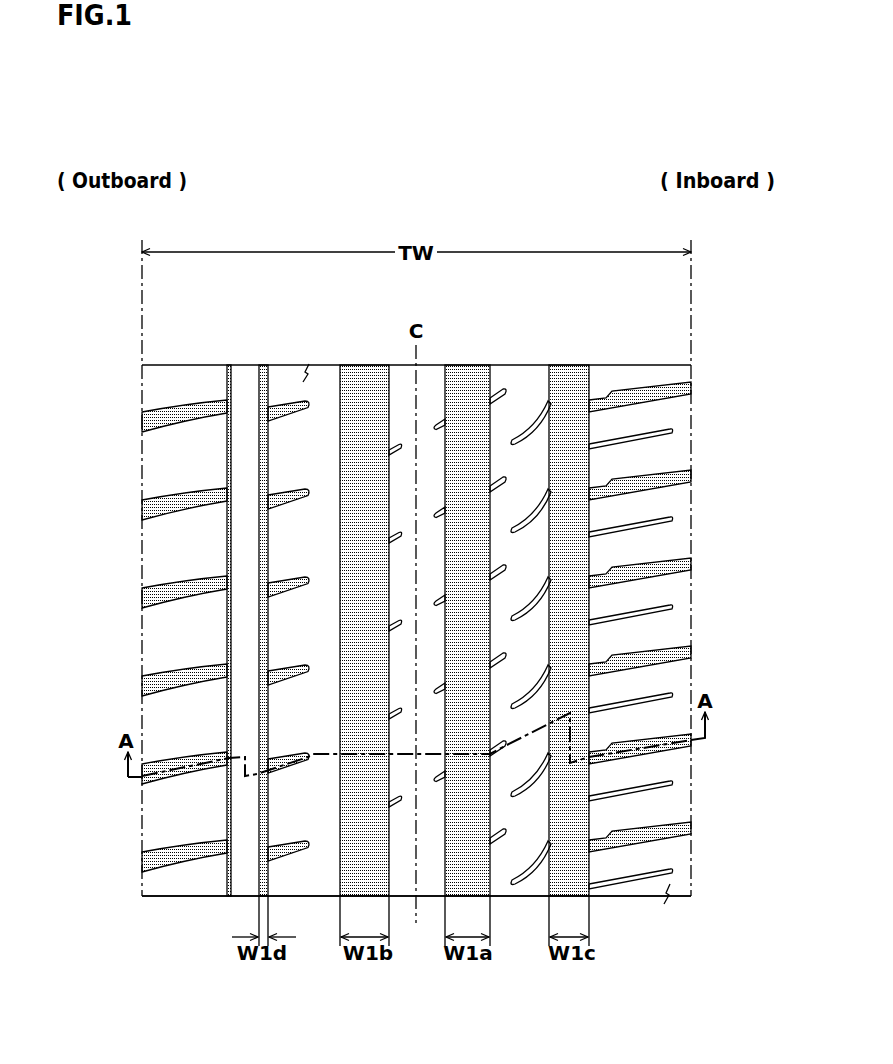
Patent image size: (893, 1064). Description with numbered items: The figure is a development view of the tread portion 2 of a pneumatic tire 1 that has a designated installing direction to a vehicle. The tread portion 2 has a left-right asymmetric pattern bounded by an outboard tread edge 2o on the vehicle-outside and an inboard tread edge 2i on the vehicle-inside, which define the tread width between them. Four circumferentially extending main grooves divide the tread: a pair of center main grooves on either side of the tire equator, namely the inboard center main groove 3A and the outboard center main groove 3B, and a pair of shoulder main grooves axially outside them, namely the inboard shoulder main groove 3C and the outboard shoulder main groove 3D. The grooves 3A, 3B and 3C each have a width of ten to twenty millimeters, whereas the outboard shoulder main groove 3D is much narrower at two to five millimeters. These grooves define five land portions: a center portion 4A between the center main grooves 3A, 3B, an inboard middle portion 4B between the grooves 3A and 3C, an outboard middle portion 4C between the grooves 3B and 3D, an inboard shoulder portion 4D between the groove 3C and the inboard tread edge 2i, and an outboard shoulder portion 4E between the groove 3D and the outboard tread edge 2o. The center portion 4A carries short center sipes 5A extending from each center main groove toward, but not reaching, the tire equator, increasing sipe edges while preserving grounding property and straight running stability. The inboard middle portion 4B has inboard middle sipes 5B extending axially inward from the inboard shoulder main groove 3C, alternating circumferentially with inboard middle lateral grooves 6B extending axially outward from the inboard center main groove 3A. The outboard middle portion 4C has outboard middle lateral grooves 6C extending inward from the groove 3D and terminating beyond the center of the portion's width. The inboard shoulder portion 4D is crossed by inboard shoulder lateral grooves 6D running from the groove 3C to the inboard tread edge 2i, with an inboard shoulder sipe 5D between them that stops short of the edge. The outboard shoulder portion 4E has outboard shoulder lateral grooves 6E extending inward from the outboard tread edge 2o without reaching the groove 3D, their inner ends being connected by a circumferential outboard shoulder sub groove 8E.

The pneumatic tire 1 is at (624, 361).
The tread portion 2 is at (522, 393).
The outboard tread edge 2o is at (140, 386).
The inboard tread edge 2i is at (693, 386).
The inboard center main groove 3A is at (465, 390).
The outboard center main groove 3B is at (370, 390).
The inboard shoulder main groove 3C is at (578, 393).
The outboard shoulder main groove 3D is at (264, 386).
The center portion 4A is at (423, 704).
The inboard middle portion 4B is at (638, 689).
The outboard middle portion 4C is at (195, 695).
The inboard shoulder portion 4D is at (688, 686).
The outboard shoulder portion 4E is at (143, 695).
The center sipe 5A is at (392, 619).
The inboard middle sipe 5B is at (523, 613).
The inboard shoulder sipe 5D is at (622, 795).
The inboard middle lateral groove 6B is at (497, 489).
The outboard middle lateral groove 6C is at (287, 581).
The inboard shoulder lateral groove 6D is at (638, 569).
The outboard shoulder lateral groove 6E is at (194, 503).
The outboard shoulder sub groove 8E is at (225, 458).